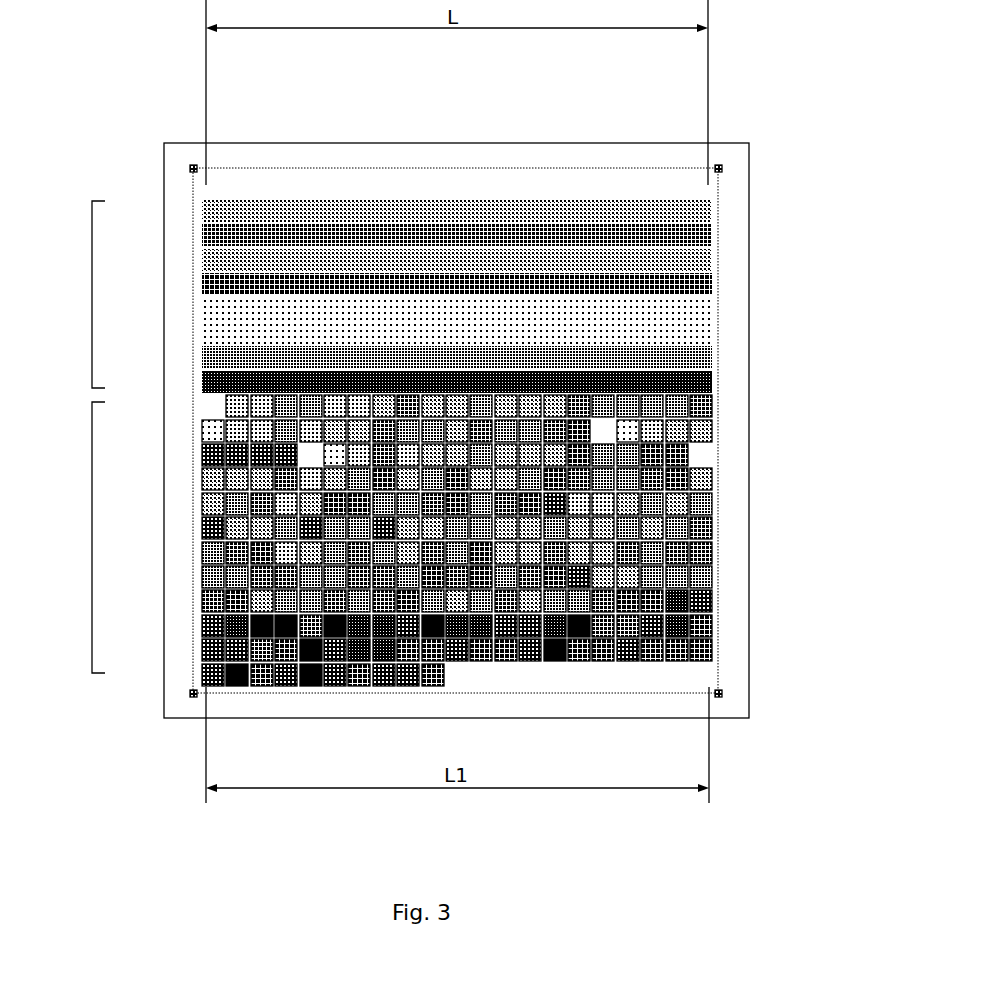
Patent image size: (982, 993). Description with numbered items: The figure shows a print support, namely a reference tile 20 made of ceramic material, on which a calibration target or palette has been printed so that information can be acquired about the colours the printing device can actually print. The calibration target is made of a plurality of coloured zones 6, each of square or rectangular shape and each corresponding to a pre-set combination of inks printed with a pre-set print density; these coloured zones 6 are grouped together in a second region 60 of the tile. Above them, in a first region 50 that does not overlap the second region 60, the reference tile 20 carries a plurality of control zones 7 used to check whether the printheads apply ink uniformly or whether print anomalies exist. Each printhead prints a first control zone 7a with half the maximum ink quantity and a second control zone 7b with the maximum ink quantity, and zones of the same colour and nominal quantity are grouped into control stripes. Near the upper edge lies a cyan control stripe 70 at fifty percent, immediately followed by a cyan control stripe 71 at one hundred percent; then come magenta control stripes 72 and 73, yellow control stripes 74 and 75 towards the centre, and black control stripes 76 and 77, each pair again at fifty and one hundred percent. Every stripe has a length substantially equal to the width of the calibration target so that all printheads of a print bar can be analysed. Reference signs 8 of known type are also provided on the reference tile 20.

The coloured zone 6 is at (215, 603).
The control zone 7 is at (481, 212).
The first control zone 7a is at (219, 214).
The second control zone 7b is at (219, 229).
The reference sign 8 is at (190, 694).
The reference tile 20 is at (191, 719).
The first region 50 is at (438, 291).
The second region 60 is at (424, 579).
The control stripe 70 is at (719, 209).
The control stripe 71 is at (720, 240).
The control stripe 72 is at (720, 259).
The control stripe 73 is at (720, 289).
The control stripe 74 is at (197, 316).
The control stripe 75 is at (197, 335).
The control stripe 76 is at (720, 357).
The control stripe 77 is at (720, 390).